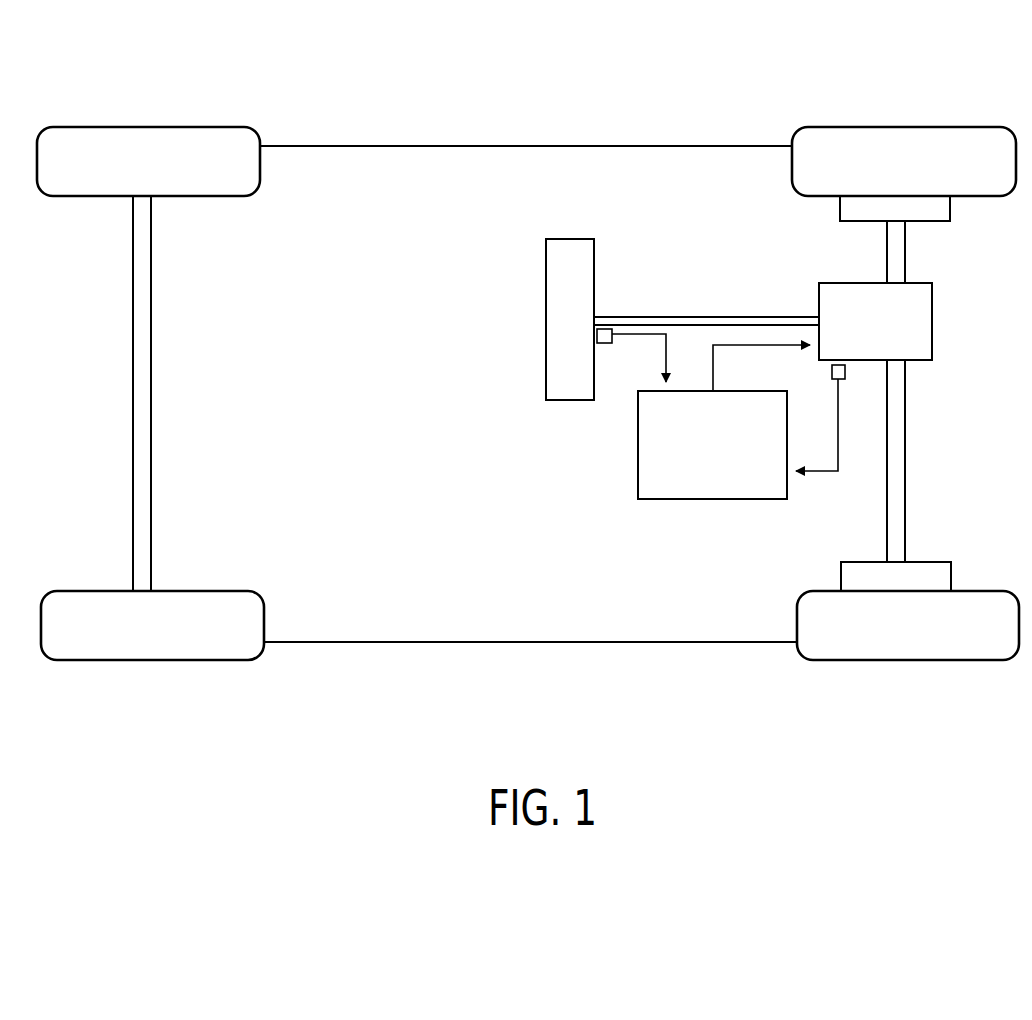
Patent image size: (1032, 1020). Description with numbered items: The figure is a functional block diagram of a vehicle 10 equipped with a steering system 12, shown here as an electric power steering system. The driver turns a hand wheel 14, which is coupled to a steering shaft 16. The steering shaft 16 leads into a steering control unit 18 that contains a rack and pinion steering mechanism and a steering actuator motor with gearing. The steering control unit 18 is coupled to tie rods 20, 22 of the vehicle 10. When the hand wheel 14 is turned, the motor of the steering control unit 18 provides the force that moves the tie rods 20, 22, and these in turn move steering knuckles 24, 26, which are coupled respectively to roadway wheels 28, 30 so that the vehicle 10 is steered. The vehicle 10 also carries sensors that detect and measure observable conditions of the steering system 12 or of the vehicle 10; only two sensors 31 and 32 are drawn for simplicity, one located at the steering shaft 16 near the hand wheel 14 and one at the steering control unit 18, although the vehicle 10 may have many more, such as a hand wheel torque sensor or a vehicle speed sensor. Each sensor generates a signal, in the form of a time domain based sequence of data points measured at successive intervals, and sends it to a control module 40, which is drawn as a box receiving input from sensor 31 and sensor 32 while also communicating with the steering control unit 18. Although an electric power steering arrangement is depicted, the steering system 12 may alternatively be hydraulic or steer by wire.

The vehicle 10 is at (567, 52).
The steering system 12 is at (677, 219).
The hand wheel 14 is at (570, 239).
The steering shaft 16 is at (680, 317).
The steering control unit 18 is at (932, 320).
The tie rod 20 is at (905, 262).
The tie rod 22 is at (905, 432).
The steering knuckle 24 is at (840, 200).
The steering knuckle 26 is at (870, 562).
The roadway wheel 28 is at (940, 127).
The roadway wheel 30 is at (960, 591).
The sensor 31 is at (604, 343).
The sensor 32 is at (846, 372).
The control module 40 is at (730, 391).